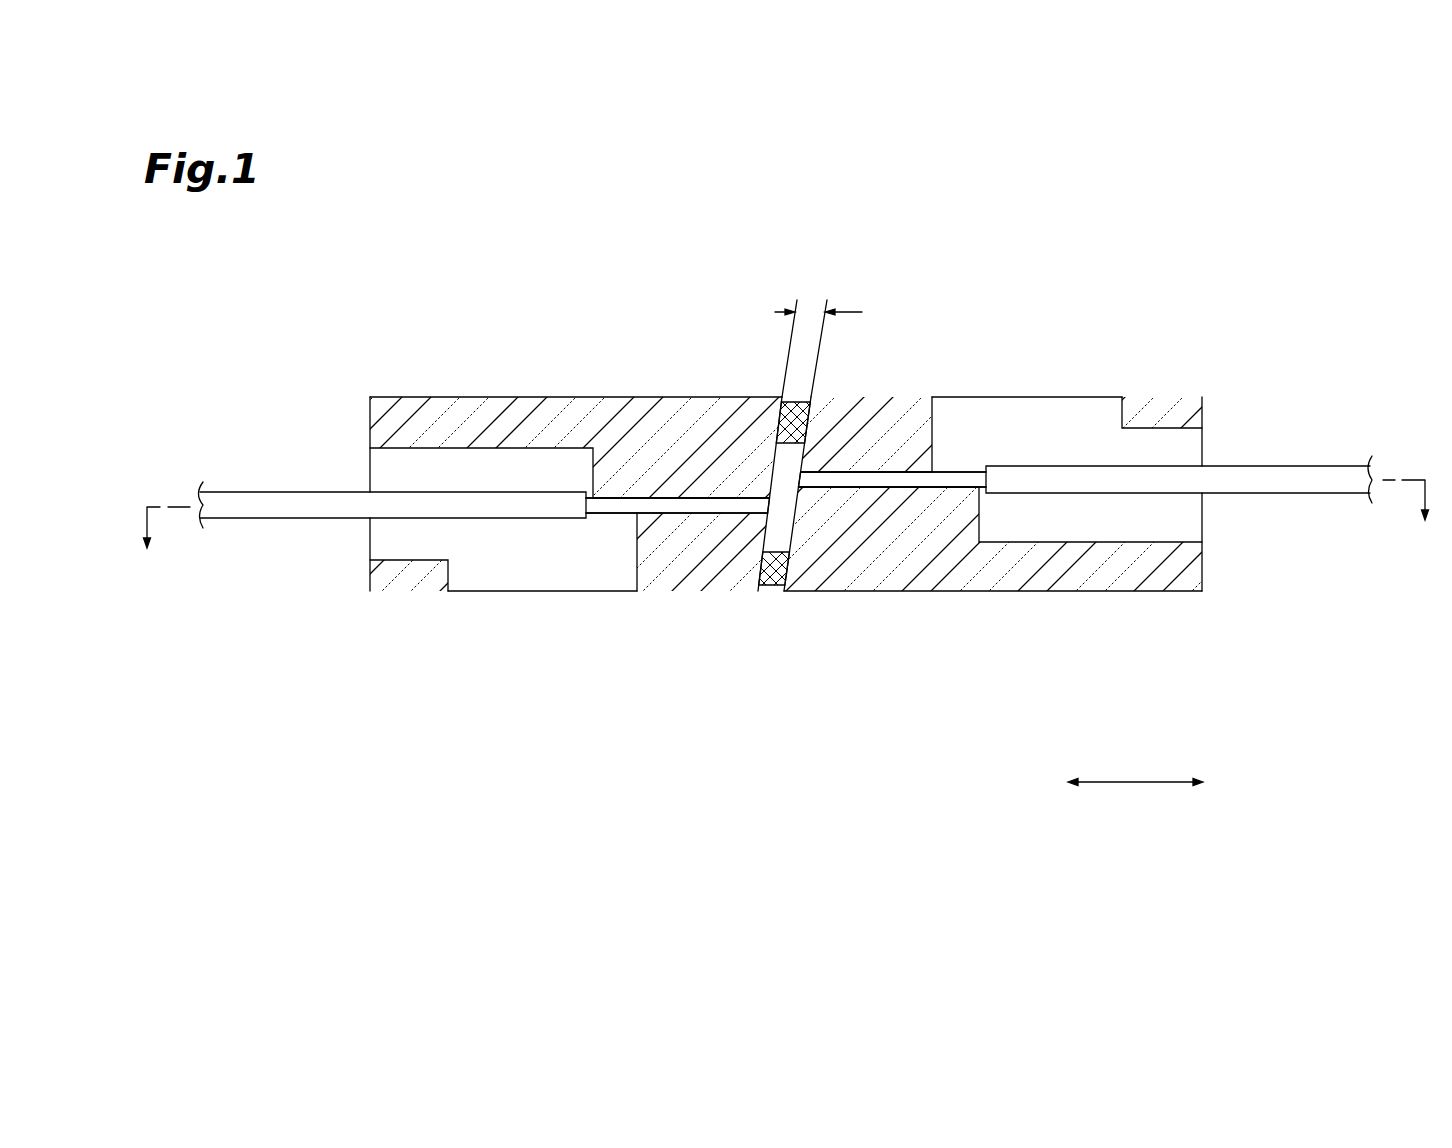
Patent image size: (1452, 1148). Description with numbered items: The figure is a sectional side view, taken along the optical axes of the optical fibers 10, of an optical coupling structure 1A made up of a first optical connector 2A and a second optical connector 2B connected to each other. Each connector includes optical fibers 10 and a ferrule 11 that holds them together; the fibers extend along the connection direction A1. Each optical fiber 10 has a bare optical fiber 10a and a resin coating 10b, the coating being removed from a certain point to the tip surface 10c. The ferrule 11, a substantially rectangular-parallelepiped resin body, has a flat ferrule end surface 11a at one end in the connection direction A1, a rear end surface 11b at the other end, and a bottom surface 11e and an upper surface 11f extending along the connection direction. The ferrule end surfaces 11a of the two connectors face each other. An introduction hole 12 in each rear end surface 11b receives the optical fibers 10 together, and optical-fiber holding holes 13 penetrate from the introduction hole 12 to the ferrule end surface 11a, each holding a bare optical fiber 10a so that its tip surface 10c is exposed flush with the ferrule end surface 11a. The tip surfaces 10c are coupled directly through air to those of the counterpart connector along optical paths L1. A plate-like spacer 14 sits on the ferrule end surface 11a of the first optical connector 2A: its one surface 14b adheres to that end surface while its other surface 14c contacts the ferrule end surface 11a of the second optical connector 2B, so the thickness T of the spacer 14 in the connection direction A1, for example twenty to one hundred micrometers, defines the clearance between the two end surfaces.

The optical coupling structure 1A is at (782, 452).
The first optical connector 2A is at (1106, 373).
The second optical connector 2B is at (466, 378).
The optical fiber 10 is at (785, 489).
The bare optical fiber 10a is at (610, 513).
The resin coating 10b is at (266, 492).
The tip surface 10c is at (803, 432).
The ferrule 11 is at (782, 497).
The ferrule end surface 11a is at (780, 428).
The rear end surface 11b is at (370, 423).
The bottom surface 11e is at (560, 396).
The upper surface 11f is at (648, 592).
The introduction hole 12 is at (380, 538).
The optical-fiber holding hole 13 is at (678, 497).
The spacer 14 is at (797, 522).
The one surface of the spacer 14b is at (812, 420).
The other surface of the spacer 14c is at (762, 560).
The optical path L1 is at (780, 480).
The thickness of the spacer T is at (818, 341).
The connection direction A1 is at (1105, 786).